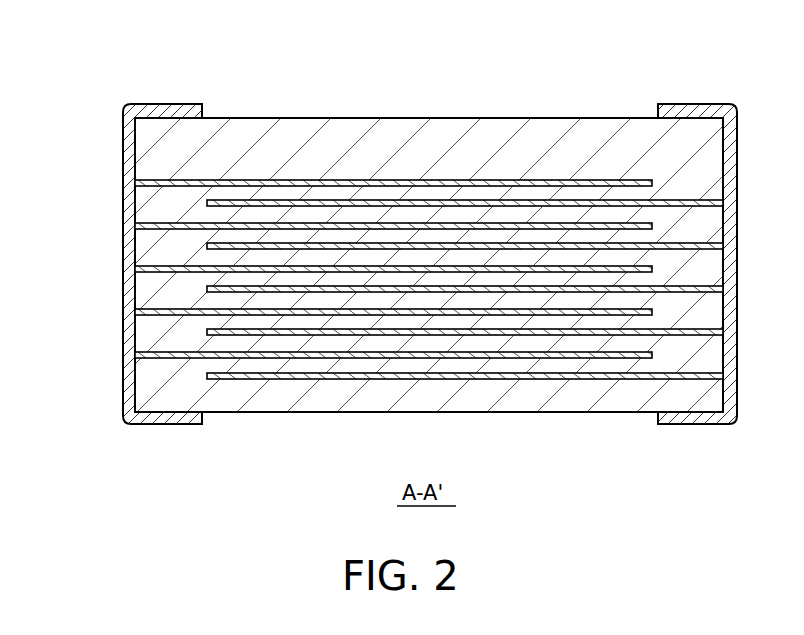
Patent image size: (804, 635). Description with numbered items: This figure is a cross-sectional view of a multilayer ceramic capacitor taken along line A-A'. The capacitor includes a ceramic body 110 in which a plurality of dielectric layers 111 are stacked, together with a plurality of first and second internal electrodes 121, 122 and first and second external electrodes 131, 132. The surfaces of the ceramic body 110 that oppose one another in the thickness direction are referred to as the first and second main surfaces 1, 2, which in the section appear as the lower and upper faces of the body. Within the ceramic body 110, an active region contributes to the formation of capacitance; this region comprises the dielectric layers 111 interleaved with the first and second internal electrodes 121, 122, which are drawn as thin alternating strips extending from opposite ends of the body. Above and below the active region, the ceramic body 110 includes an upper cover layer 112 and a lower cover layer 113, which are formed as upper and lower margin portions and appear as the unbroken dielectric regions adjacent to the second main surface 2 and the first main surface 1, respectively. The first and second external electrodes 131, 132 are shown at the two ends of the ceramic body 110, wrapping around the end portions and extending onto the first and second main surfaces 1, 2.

The first main surface 1 is at (348, 412).
The second main surface 2 is at (521, 118).
The ceramic body 110 is at (409, 118).
The dielectric layer 111 is at (645, 192).
The upper cover layer 112 is at (345, 135).
The lower cover layer 113 is at (581, 400).
The first internal electrode 121 is at (150, 181).
The second internal electrode 122 is at (252, 200).
The first external electrode 131 is at (165, 104).
The second external electrode 132 is at (688, 104).